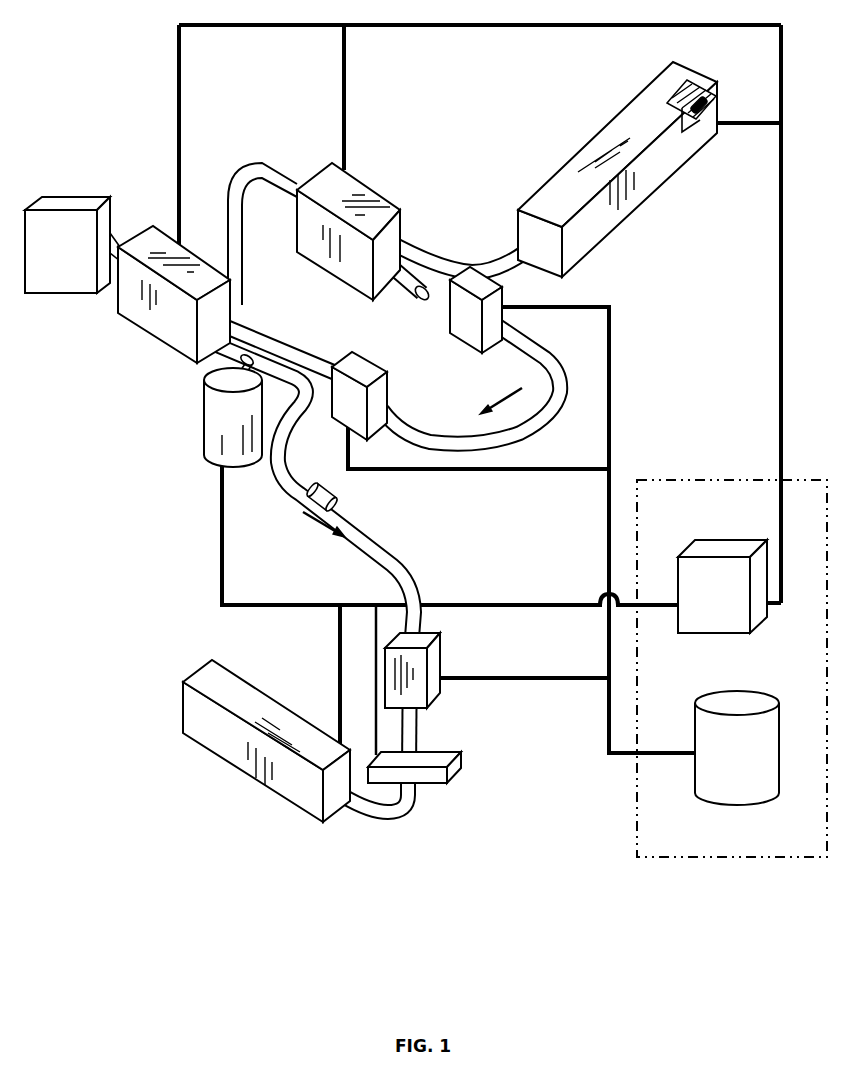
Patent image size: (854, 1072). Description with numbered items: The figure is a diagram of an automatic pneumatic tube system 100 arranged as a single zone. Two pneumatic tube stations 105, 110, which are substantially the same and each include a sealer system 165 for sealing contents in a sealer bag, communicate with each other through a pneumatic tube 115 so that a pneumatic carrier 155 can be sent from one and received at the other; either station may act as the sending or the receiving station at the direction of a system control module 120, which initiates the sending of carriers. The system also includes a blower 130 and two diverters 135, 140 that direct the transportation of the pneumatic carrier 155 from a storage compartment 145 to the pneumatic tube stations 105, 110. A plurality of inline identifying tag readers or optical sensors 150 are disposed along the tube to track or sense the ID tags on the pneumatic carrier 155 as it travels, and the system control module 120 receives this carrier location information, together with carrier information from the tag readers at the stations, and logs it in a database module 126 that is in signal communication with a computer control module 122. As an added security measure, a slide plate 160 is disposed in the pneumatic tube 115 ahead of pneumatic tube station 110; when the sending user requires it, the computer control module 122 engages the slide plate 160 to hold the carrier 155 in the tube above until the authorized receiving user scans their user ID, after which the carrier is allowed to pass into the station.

The pneumatic tube system 100 is at (130, 80).
The pneumatic tube station 105 is at (664, 103).
The pneumatic tube station 110 is at (205, 719).
The pneumatic tube 115 is at (378, 547).
The system control module 120 is at (637, 858).
The computer control module 122 is at (765, 616).
The database module 126 is at (704, 768).
The blower 130 is at (200, 418).
The diverter 135 is at (135, 324).
The diverter 140 is at (374, 188).
The storage compartment 145 is at (50, 208).
The inline identifying tag reader or optical sensor 150 is at (505, 301).
The pneumatic carrier 155 is at (292, 490).
The slide plate 160 is at (437, 786).
The sealer system 165 is at (716, 100).